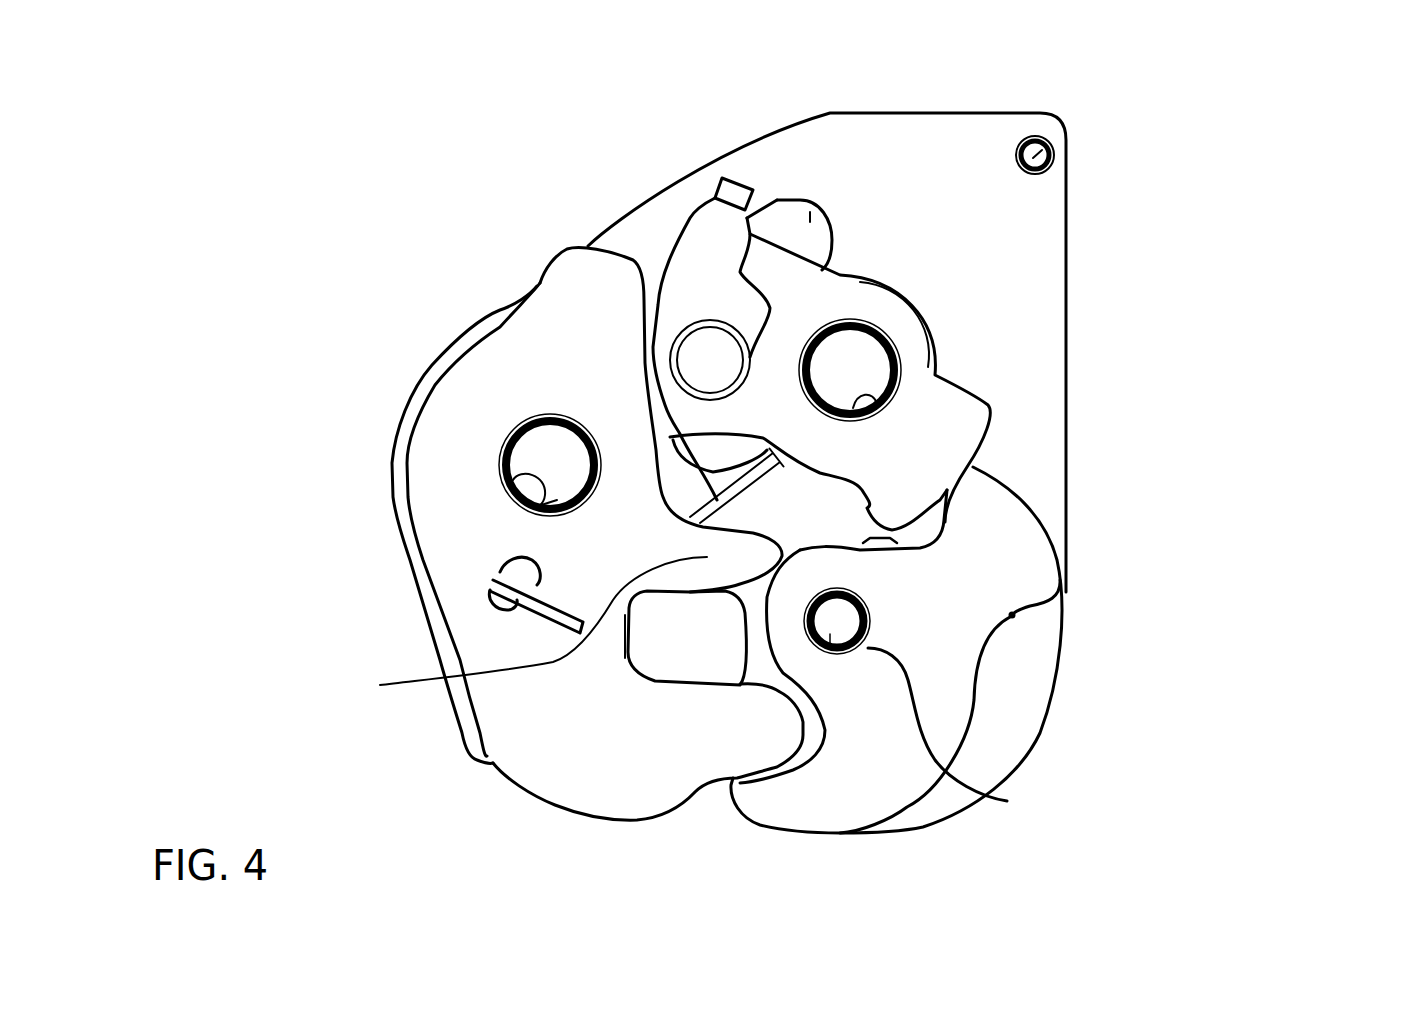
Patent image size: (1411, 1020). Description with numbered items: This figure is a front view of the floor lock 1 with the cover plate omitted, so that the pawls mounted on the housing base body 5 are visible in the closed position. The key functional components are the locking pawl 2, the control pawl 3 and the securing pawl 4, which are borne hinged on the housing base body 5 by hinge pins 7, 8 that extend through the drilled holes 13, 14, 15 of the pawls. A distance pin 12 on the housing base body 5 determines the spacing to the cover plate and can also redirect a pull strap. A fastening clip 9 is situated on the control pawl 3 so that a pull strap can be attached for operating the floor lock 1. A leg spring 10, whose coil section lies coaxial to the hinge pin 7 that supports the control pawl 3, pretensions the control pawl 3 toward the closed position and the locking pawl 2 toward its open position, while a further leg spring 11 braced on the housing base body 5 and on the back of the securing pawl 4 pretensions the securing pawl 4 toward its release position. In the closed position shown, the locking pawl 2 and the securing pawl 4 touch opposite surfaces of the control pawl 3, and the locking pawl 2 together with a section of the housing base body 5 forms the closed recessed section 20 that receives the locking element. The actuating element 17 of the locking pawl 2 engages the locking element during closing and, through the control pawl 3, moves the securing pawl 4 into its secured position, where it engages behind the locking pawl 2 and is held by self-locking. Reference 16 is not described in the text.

The floor lock 1 is at (1232, 202).
The locking pawl 2 is at (543, 717).
The control pawl 3 is at (937, 457).
The securing pawl 4 is at (917, 635).
The housing base body 5 is at (1008, 262).
The hinge pin 7 is at (548, 461).
The hinge pin 8 is at (840, 620).
The fastening clip 9 is at (693, 285).
The leg spring 10 is at (695, 442).
The leg spring 11 is at (1012, 615).
The distance pin 12 is at (1055, 147).
The drilled hole 13 is at (524, 474).
The drilled hole 14 is at (893, 400).
The drilled hole 15 is at (957, 736).
The pin 16 is at (803, 213).
The actuating element 17 is at (513, 670).
The recessed section 20 is at (713, 668).